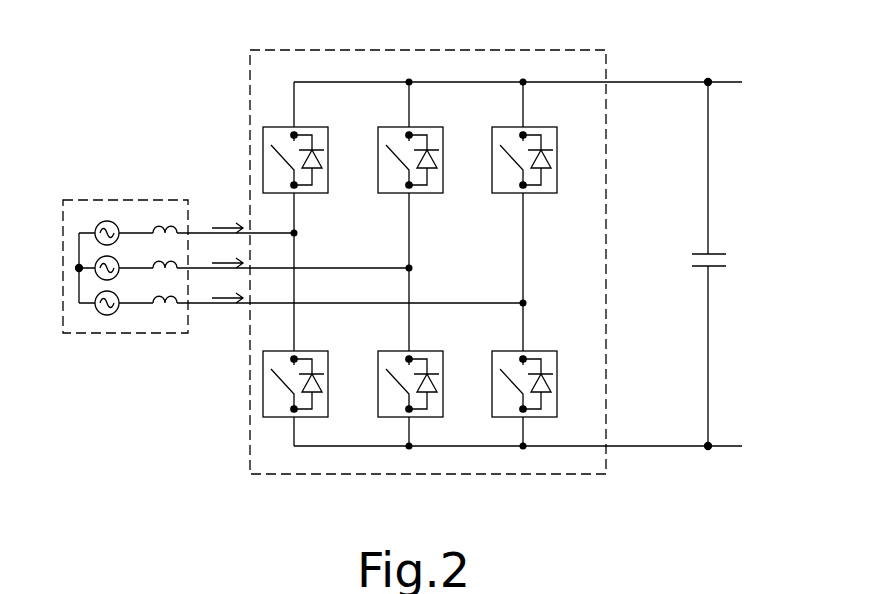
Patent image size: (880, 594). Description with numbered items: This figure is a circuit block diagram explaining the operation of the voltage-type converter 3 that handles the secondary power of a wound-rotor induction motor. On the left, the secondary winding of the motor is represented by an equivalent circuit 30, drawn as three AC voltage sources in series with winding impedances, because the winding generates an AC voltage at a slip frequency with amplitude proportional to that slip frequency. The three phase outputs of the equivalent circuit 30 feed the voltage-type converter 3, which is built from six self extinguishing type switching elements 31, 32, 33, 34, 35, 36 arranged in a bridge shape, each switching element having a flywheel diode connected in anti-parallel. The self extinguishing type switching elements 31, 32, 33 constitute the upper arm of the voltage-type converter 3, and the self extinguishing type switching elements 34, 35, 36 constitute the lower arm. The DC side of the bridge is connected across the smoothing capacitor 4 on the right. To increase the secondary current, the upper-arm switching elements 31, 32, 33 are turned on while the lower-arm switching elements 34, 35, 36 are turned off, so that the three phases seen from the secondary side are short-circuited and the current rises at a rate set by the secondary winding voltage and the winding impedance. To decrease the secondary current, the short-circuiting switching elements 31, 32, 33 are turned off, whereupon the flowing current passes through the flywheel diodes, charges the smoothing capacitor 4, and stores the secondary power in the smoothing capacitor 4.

The voltage-type converter 3 is at (563, 50).
The smoothing capacitor 4 is at (700, 272).
The equivalent circuit 30 is at (122, 200).
The self extinguishing type switching element 31 is at (307, 127).
The self extinguishing type switching element 32 is at (422, 127).
The self extinguishing type switching element 33 is at (536, 127).
The self extinguishing type switching element 34 is at (307, 351).
The self extinguishing type switching element 35 is at (422, 351).
The self extinguishing type switching element 36 is at (536, 351).